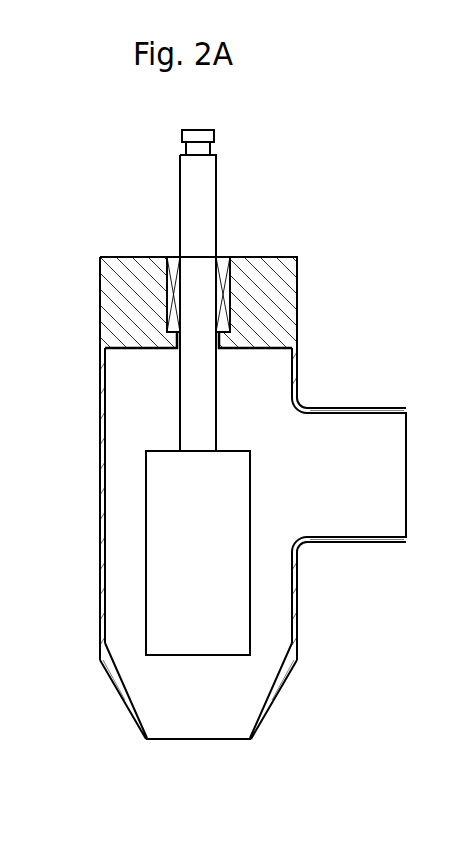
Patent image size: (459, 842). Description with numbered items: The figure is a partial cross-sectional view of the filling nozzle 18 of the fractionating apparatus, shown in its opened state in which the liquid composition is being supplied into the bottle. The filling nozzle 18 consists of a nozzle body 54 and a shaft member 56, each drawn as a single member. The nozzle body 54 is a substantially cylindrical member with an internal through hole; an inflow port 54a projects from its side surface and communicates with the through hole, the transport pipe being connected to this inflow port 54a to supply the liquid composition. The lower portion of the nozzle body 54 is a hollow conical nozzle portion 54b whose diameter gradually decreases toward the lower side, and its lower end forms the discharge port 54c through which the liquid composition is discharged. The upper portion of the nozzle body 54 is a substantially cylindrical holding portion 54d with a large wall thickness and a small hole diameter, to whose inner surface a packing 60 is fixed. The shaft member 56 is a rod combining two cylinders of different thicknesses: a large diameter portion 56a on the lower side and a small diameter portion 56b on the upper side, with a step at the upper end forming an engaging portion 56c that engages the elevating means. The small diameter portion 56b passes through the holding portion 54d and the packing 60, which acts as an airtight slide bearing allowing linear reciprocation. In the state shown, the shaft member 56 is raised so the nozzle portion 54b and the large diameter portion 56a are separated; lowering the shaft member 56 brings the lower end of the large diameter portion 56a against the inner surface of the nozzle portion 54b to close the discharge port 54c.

The filling nozzle 18 is at (309, 245).
The nozzle body 54 is at (335, 556).
The inflow port 54a is at (370, 407).
The nozzle portion 54b is at (118, 704).
The discharge port 54c is at (195, 747).
The holding portion 54d is at (297, 303).
The shaft member 56 is at (222, 191).
The large diameter portion 56a is at (146, 547).
The small diameter portion 56b is at (180, 390).
The engaging portion 56c is at (193, 137).
The packing 60 is at (167, 293).